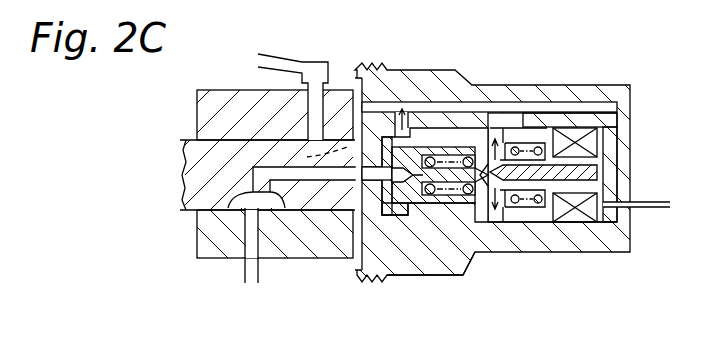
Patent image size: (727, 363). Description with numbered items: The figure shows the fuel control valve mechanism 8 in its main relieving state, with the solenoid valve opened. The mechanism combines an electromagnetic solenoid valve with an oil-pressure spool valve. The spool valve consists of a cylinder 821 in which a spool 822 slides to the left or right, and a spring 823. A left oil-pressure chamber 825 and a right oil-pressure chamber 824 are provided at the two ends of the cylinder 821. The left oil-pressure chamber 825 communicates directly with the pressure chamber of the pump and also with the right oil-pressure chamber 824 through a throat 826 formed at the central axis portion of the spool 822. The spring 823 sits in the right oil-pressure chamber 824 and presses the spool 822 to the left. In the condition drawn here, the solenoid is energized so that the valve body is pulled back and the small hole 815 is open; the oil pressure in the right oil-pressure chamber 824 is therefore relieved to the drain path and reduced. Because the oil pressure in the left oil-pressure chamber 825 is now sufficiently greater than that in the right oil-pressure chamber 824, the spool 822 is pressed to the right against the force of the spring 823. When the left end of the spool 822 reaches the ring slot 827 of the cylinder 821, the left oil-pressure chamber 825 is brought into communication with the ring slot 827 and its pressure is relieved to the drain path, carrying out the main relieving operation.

The fuel control valve mechanism 8 is at (486, 183).
The small hole 815 is at (496, 160).
The cylinder 821 is at (446, 158).
The spool 822 is at (442, 147).
The spring 823 is at (468, 246).
The right oil-pressure chamber 824 is at (470, 206).
The left oil-pressure chamber 825 is at (380, 187).
The throat 826 is at (413, 178).
The ring slot 827 is at (400, 216).